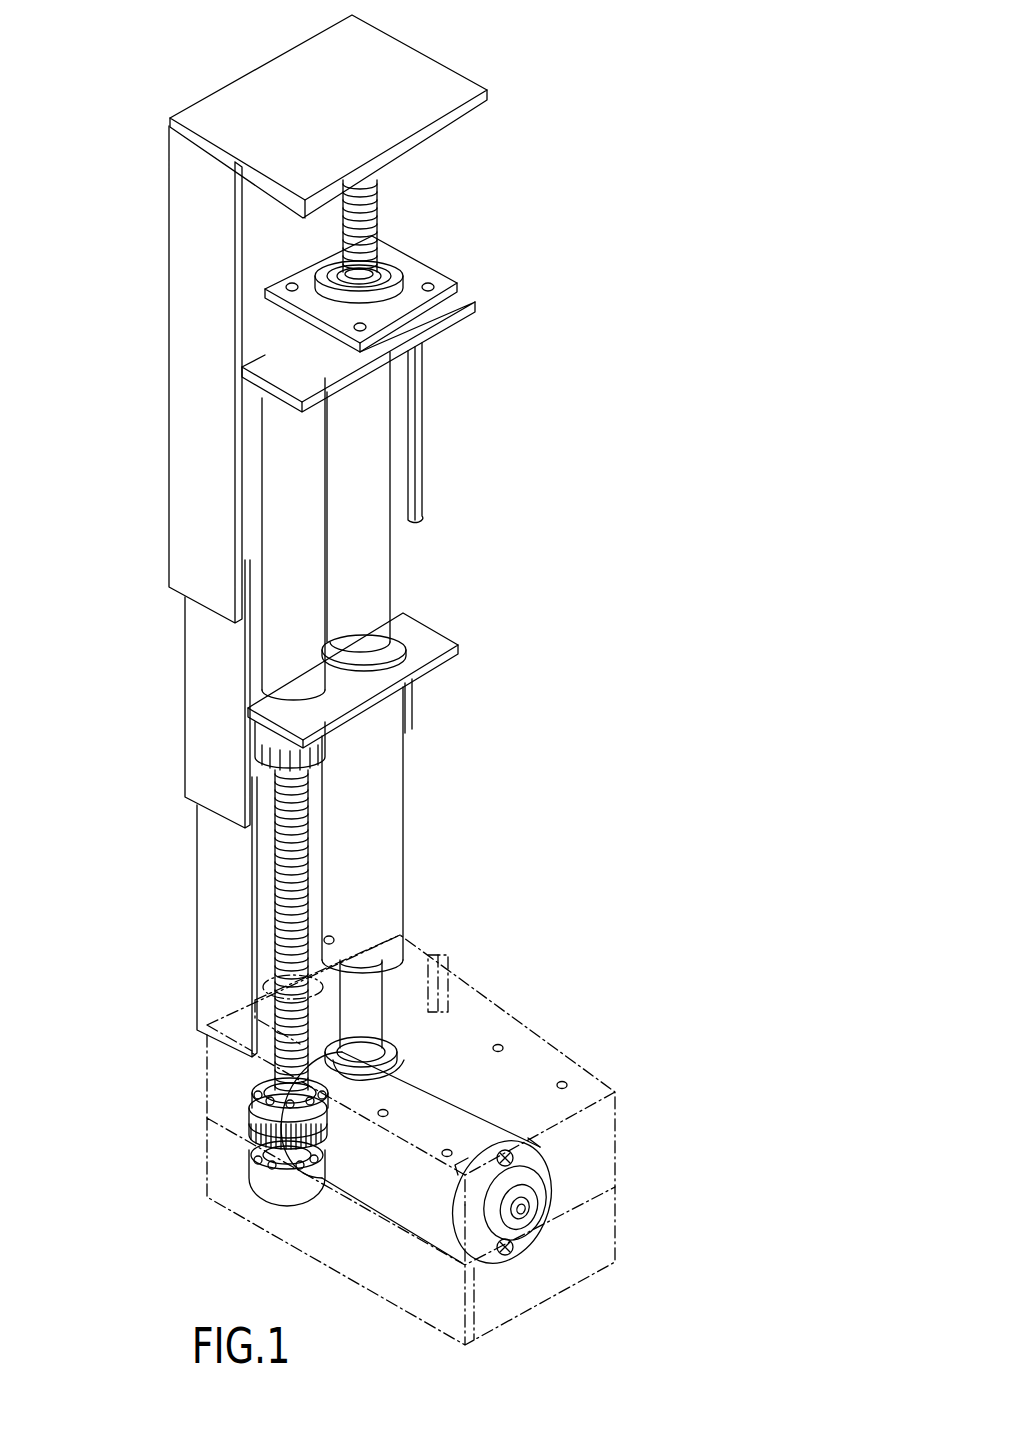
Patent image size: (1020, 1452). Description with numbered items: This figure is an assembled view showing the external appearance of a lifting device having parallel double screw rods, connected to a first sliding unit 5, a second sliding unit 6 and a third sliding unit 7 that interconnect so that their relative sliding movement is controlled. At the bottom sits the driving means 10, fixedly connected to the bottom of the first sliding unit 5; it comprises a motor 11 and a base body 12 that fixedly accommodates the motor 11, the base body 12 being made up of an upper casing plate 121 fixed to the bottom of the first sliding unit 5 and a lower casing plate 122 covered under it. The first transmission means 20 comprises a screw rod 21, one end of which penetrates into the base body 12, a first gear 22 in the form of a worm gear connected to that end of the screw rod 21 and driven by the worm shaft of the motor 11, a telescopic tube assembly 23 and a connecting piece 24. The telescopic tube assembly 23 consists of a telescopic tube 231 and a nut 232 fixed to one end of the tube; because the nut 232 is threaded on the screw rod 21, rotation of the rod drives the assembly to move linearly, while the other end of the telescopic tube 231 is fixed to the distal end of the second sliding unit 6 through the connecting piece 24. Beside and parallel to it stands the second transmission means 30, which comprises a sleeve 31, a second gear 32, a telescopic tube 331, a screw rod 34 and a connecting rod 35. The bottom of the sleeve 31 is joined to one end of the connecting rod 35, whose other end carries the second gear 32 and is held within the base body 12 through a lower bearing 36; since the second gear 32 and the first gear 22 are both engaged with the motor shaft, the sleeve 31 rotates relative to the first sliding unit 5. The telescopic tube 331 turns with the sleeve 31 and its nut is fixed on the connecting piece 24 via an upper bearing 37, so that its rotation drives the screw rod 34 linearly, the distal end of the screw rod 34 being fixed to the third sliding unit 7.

The driving means 10 is at (429, 680).
The motor 11 is at (456, 1107).
The base body 12 is at (488, 1140).
The upper casing plate 121 is at (612, 1137).
The lower casing plate 122 is at (722, 1125).
The first sliding unit 5 is at (205, 922).
The second sliding unit 6 is at (190, 695).
The third sliding unit 7 is at (178, 352).
The first transmission means 20 is at (324, 552).
The screw rod 21 is at (311, 872).
The first gear 22 is at (255, 1113).
The telescopic tube assembly 23 is at (396, 698).
The telescopic tube 231 is at (310, 639).
The nut 232 is at (325, 749).
The connecting piece 24 is at (470, 304).
The second transmission means 30 is at (389, 489).
The sleeve 31 is at (390, 854).
The second gear 32 is at (397, 1042).
The telescopic tube 331 is at (375, 459).
The screw rod 34 is at (378, 212).
The connecting rod 35 is at (402, 1016).
The lower bearing 36 is at (372, 987).
The upper bearing 37 is at (402, 272).